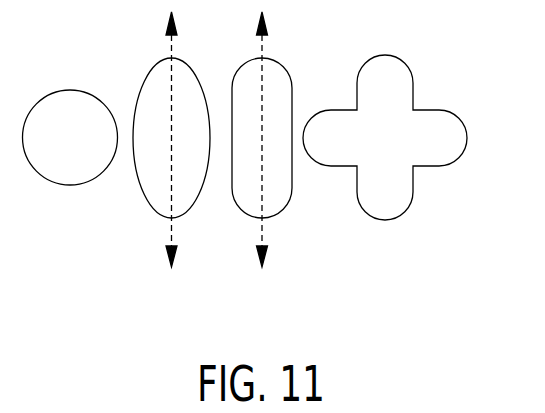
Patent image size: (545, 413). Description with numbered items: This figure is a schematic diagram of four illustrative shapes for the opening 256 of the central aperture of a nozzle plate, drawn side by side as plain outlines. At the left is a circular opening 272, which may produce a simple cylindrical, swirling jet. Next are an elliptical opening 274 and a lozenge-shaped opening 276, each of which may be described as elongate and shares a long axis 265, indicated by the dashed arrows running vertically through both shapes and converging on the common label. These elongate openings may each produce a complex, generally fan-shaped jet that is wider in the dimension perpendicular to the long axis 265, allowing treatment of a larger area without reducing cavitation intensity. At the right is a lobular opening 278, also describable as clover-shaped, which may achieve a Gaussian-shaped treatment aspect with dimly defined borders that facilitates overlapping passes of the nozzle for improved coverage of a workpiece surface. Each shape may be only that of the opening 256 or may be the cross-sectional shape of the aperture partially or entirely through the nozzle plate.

The opening 256 is at (438, 250).
The long axis 265 is at (172, 222).
The circular opening 272 is at (48, 180).
The elliptical opening 274 is at (188, 62).
The lozenge-shaped opening 276 is at (283, 62).
The lobular opening 278 is at (415, 85).